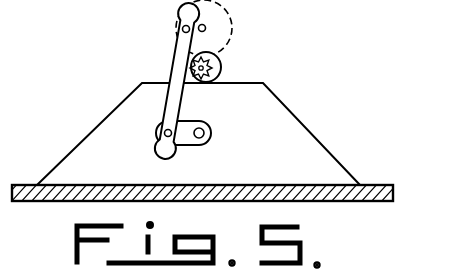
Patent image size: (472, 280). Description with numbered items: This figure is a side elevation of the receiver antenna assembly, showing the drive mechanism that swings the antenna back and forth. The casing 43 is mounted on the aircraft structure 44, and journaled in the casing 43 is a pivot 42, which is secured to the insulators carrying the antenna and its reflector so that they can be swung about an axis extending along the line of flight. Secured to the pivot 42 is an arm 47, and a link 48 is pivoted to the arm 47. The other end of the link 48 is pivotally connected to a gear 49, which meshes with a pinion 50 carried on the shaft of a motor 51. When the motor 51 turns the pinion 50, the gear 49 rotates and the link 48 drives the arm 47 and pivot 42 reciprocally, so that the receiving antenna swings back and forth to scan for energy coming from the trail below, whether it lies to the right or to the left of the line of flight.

The pivot 42 is at (207, 134).
The casing 43 is at (288, 128).
The aircraft structure 44 is at (372, 186).
The arm 47 is at (192, 145).
The link 48 is at (177, 58).
The gear 49 is at (218, 23).
The pinion 50 is at (216, 60).
The motor 51 is at (221, 71).